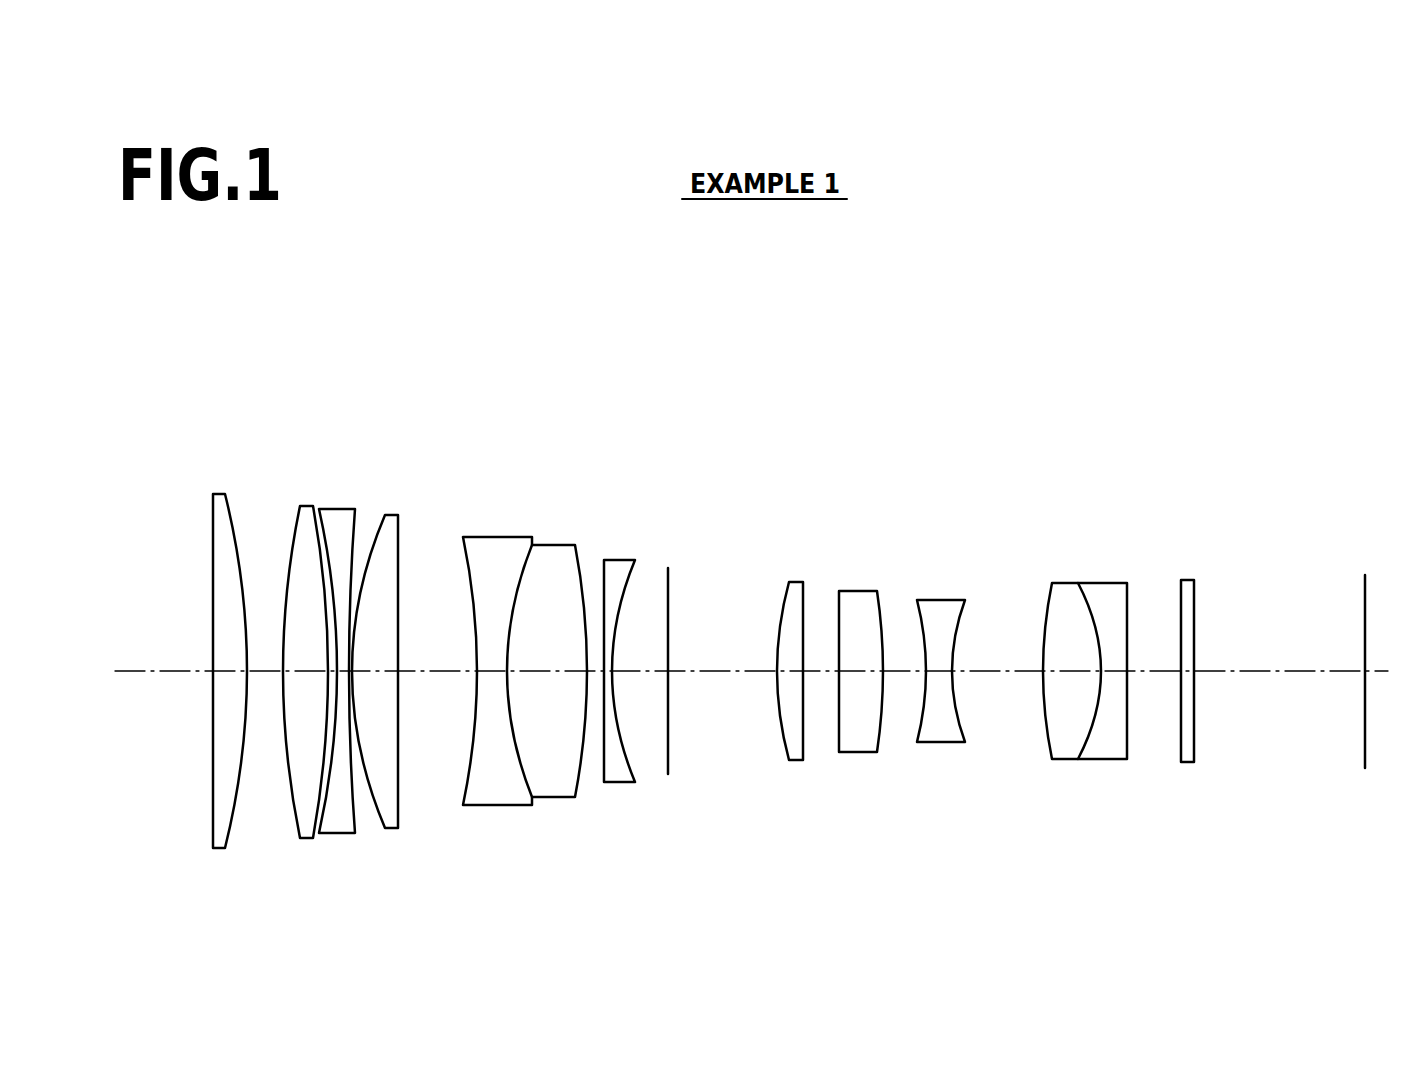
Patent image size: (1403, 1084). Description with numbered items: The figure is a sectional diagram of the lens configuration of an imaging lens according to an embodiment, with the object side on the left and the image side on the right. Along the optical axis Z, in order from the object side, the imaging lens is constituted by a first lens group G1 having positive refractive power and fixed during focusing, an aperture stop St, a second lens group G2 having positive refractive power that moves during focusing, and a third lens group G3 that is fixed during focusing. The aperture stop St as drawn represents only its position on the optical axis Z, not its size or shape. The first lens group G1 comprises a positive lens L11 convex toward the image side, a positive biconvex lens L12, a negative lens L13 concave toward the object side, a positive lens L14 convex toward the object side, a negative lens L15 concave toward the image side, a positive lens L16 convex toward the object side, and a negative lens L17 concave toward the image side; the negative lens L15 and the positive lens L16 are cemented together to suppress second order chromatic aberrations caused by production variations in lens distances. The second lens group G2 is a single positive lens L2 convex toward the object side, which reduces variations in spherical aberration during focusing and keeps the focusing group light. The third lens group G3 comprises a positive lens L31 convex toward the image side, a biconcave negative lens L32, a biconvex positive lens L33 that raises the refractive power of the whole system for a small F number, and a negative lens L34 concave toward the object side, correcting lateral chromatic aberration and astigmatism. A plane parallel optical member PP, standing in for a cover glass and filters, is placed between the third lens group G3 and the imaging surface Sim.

The first lens group G1 is at (612, 317).
The second lens group G2 is at (827, 317).
The third lens group G3 is at (1057, 317).
The positive lens L11 is at (222, 496).
The positive biconvex lens L12 is at (306, 512).
The negative lens L13 is at (340, 515).
The positive lens L14 is at (393, 520).
The negative lens L15 is at (500, 548).
The positive lens L16 is at (557, 552).
The negative lens L17 is at (620, 567).
The positive lens L2 is at (798, 583).
The positive lens L31 is at (858, 591).
The biconcave negative lens L32 is at (940, 610).
The biconvex positive lens L33 is at (1063, 592).
The negative lens L34 is at (1107, 590).
The aperture stop St is at (668, 757).
The plane parallel optical member PP is at (1179, 753).
The imaging surface Sim is at (1360, 753).
The optical axis Z is at (160, 668).